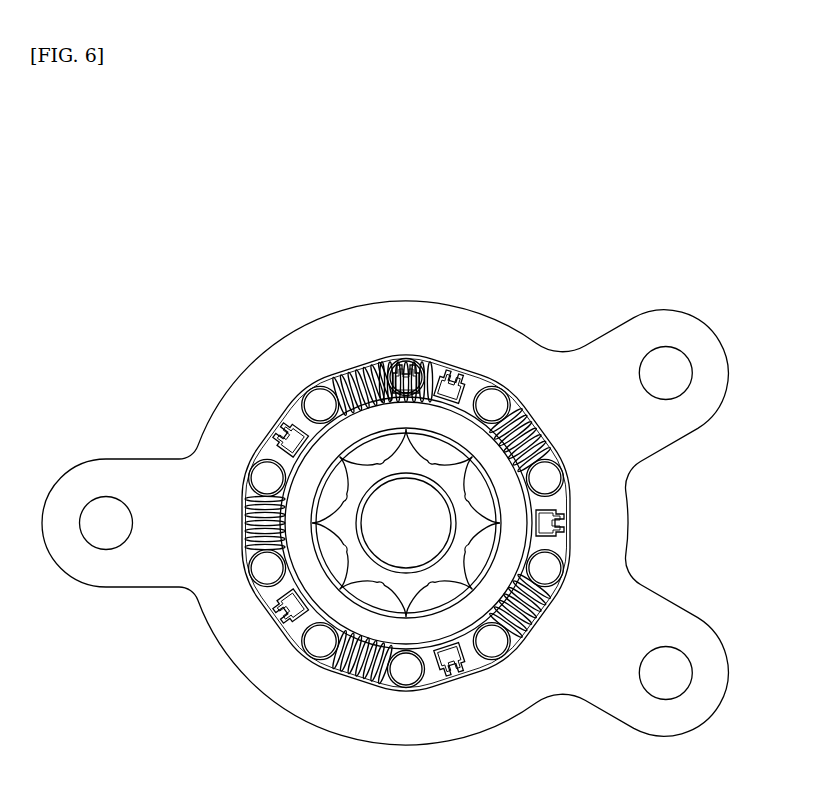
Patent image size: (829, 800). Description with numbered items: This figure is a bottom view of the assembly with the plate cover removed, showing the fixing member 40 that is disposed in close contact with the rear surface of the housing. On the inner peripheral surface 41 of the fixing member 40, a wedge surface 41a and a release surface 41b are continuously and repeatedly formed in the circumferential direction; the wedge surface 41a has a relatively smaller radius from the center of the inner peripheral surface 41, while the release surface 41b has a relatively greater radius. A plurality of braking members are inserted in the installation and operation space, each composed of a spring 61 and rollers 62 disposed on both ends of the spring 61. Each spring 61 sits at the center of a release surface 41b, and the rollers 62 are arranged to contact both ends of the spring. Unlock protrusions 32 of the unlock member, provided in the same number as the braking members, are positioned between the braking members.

The fixing member 40 is at (240, 367).
The inner peripheral surface 41 is at (400, 163).
The wedge surface 41a is at (325, 422).
The release surface 41b is at (398, 425).
The unlock protrusion 32 is at (457, 375).
The spring 61 is at (347, 363).
The roller 62 is at (317, 402).